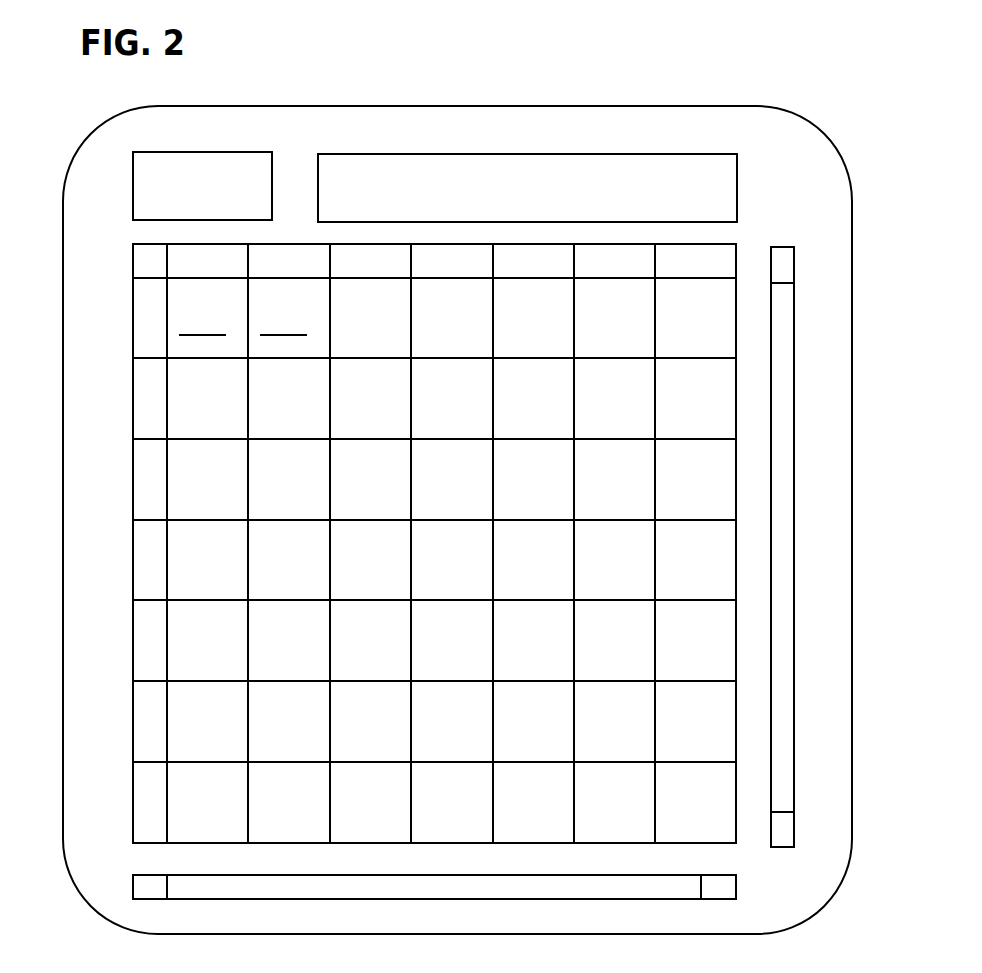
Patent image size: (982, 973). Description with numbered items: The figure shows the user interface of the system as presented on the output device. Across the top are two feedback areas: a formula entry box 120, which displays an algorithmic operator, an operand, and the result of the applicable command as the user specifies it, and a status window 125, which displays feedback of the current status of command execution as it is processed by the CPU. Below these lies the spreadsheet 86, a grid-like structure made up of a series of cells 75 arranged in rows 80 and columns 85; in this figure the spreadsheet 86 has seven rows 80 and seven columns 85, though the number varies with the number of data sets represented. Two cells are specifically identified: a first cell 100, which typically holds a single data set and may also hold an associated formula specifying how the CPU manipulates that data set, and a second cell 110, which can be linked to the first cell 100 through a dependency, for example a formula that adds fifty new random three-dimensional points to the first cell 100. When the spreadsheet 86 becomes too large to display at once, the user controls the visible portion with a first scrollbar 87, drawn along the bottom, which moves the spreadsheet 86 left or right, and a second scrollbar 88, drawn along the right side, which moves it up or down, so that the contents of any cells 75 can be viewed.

The cells 75 is at (202, 622).
The rows 80 is at (126, 472).
The columns 85 is at (538, 853).
The spreadsheet 86 is at (126, 772).
The first scrollbar 87 is at (329, 888).
The second scrollbar 88 is at (782, 432).
The first cell 100 is at (202, 319).
The second cell 110 is at (283, 319).
The formula entry box 120 is at (202, 186).
The status window 125 is at (527, 188).